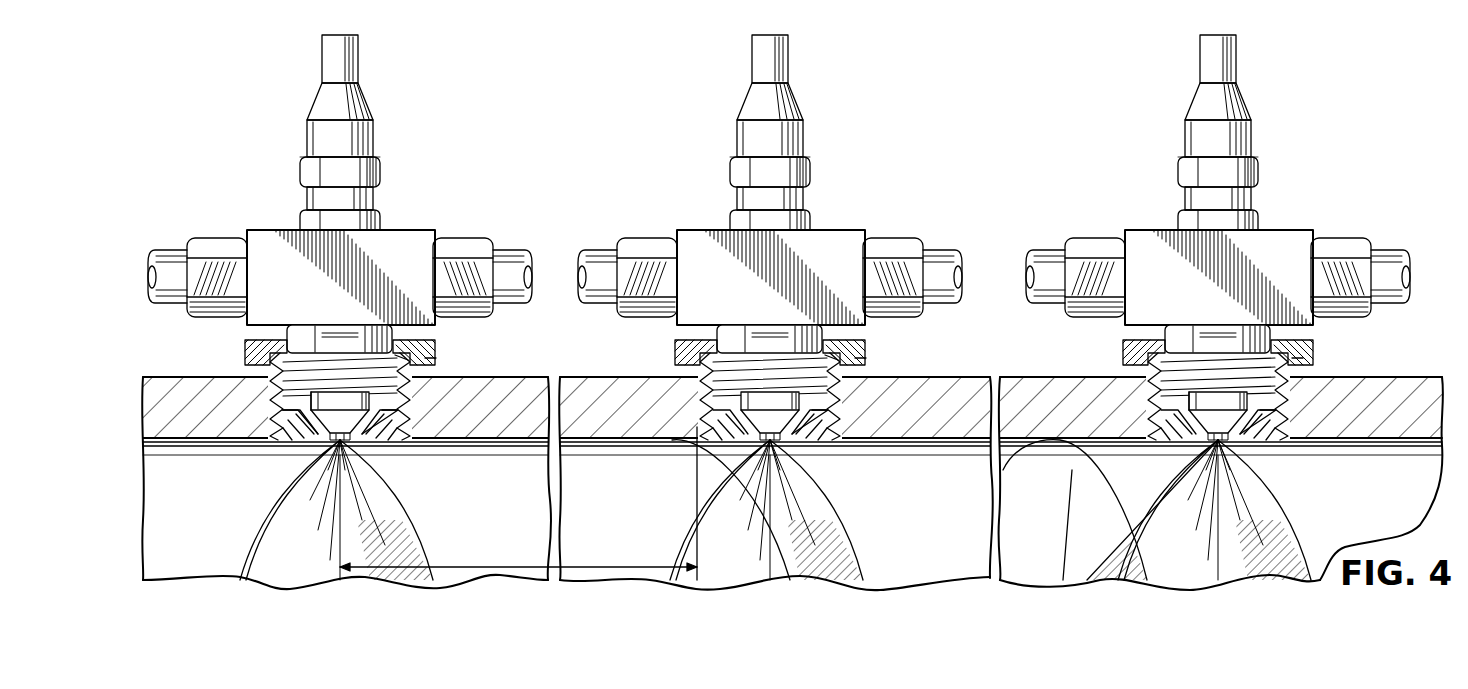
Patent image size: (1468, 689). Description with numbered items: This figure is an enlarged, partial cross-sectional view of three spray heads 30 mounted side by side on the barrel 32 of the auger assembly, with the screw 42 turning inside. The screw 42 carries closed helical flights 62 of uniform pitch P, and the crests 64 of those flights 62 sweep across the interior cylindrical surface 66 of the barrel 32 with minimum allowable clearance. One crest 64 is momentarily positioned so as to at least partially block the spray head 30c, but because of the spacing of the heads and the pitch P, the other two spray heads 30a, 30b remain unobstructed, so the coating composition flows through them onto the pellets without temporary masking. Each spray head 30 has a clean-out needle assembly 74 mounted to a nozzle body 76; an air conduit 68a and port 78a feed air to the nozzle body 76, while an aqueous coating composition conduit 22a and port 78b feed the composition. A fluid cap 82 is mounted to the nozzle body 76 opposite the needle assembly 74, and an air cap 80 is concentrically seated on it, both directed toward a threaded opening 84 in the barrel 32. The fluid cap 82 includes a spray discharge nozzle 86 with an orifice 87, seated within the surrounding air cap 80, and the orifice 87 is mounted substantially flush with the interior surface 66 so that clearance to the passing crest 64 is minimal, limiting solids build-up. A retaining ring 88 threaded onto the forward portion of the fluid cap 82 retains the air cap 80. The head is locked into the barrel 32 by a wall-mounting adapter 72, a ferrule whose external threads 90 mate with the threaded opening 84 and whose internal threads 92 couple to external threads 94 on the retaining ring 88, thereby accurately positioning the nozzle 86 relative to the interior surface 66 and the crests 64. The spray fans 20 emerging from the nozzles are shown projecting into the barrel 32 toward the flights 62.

The spray fan edge 20 is at (389, 495).
The aqueous coating composition conduit 22a is at (507, 257).
The spray head 30 is at (443, 127).
The spray head 30a is at (1298, 209).
The spray head 30b is at (866, 209).
The spray head 30c is at (418, 216).
The barrel 32 is at (518, 383).
The screw 42 is at (229, 553).
The helical flights 62 is at (304, 568).
The crests 64 is at (348, 461).
The interior cylindrical surface 66 is at (926, 447).
The air conduit 68a is at (163, 258).
The wall-mounting adapter 72 is at (438, 362).
The clean-out needle assembly 74 is at (359, 71).
The nozzle body 76 is at (292, 284).
The air port 78a is at (249, 239).
The aqueous coating composition port 78b is at (440, 240).
The air cap 80 is at (272, 393).
The fluid cap 82 is at (302, 328).
The threaded opening 84 is at (290, 421).
The spray discharge nozzle 86 is at (330, 445).
The orifice 87 is at (339, 449).
The retaining ring 88 is at (246, 352).
The external threads 90 is at (262, 430).
The internal threads 92 is at (405, 360).
The external threads 94 is at (418, 411).
The pitch P is at (518, 503).